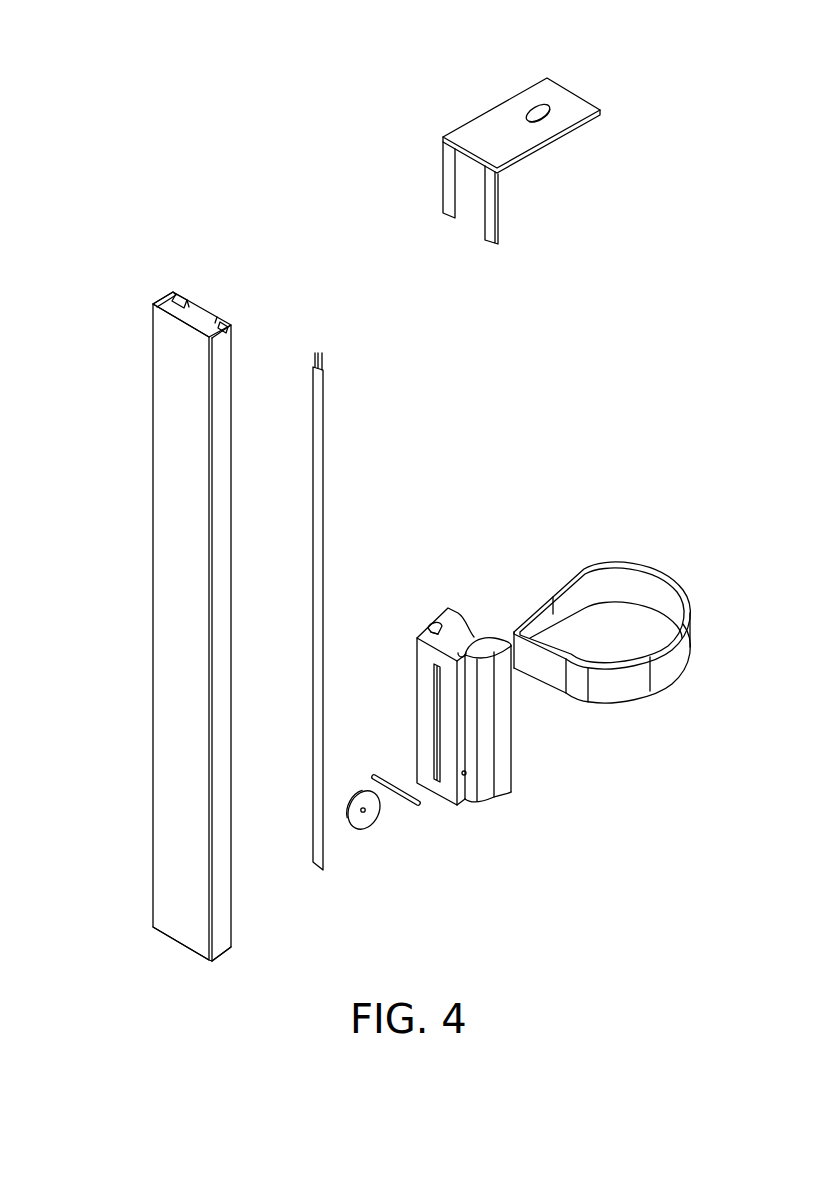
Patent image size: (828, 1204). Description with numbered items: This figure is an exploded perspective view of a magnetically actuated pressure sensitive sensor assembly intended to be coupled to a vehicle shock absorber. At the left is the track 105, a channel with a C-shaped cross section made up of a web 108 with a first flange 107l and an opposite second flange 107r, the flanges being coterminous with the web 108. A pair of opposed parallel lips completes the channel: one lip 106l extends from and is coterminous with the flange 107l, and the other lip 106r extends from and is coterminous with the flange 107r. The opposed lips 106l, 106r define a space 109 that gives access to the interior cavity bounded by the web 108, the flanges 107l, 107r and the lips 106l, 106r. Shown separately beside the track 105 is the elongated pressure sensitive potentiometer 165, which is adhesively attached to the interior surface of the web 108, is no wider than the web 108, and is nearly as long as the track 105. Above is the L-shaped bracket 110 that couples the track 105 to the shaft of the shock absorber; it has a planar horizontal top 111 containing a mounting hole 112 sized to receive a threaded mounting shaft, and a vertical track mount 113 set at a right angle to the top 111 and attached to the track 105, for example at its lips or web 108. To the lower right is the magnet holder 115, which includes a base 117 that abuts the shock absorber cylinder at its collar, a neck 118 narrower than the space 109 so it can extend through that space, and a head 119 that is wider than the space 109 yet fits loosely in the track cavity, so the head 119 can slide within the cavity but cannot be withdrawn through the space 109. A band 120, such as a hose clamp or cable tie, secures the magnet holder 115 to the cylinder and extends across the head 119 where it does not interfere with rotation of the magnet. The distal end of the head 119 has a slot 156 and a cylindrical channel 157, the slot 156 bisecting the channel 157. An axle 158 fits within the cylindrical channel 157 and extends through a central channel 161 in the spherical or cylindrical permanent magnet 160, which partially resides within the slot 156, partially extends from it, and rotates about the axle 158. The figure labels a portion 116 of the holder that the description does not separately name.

The track 105 is at (145, 532).
The web 108 is at (173, 385).
The first flange 107l is at (175, 292).
The second flange 107r is at (219, 343).
The lip 106l is at (186, 312).
The lip 106r is at (203, 318).
The space 109 is at (193, 316).
The pressure sensitive potentiometer 165 is at (320, 452).
The bracket 110 is at (543, 150).
The planar horizontal top 111 is at (500, 128).
The mounting hole 112 is at (532, 108).
The vertical track mount 113 is at (483, 238).
The band 120 is at (612, 582).
The magnet holder 115 is at (506, 737).
The clip body 116 is at (452, 640).
The base 117 is at (490, 645).
The neck 118 is at (438, 630).
The head 119 is at (430, 628).
The slot 156 is at (440, 765).
The cylindrical channel 157 is at (465, 776).
The axle 158 is at (392, 790).
The permanent magnet 160 is at (362, 828).
The central channel 161 is at (364, 812).